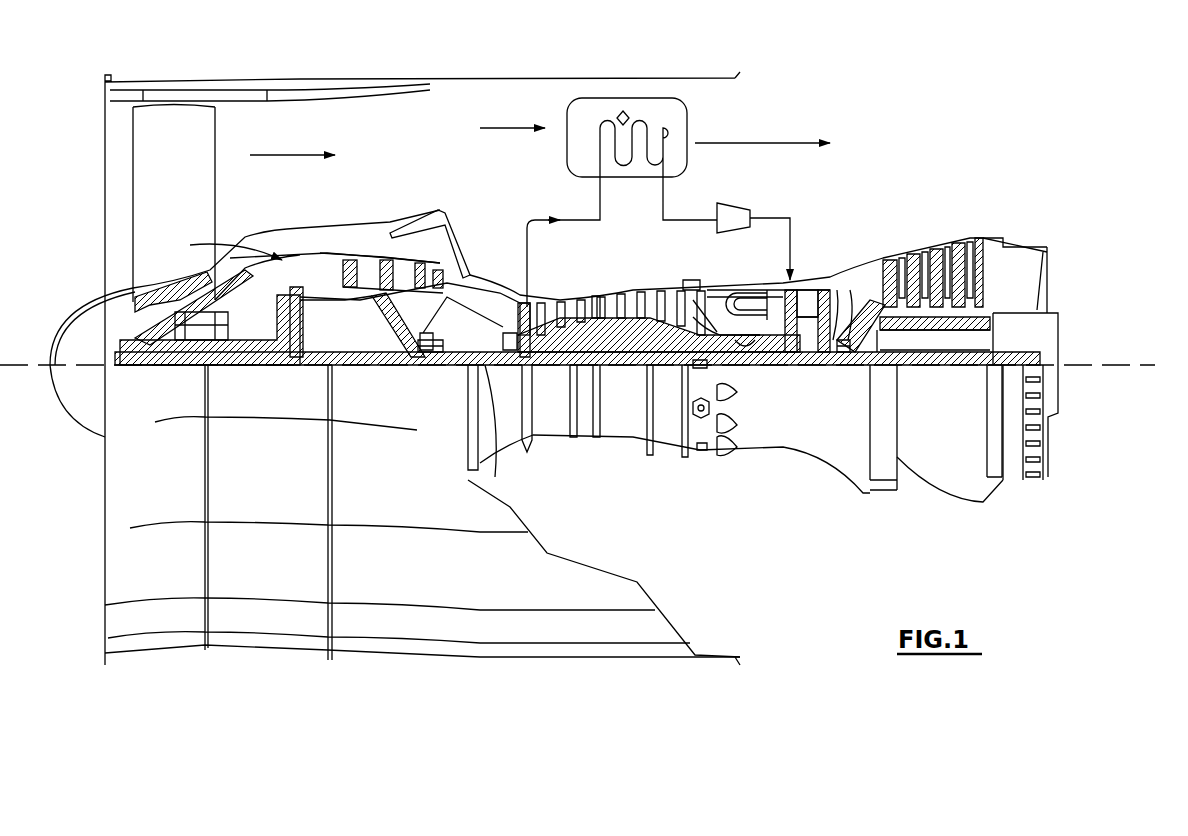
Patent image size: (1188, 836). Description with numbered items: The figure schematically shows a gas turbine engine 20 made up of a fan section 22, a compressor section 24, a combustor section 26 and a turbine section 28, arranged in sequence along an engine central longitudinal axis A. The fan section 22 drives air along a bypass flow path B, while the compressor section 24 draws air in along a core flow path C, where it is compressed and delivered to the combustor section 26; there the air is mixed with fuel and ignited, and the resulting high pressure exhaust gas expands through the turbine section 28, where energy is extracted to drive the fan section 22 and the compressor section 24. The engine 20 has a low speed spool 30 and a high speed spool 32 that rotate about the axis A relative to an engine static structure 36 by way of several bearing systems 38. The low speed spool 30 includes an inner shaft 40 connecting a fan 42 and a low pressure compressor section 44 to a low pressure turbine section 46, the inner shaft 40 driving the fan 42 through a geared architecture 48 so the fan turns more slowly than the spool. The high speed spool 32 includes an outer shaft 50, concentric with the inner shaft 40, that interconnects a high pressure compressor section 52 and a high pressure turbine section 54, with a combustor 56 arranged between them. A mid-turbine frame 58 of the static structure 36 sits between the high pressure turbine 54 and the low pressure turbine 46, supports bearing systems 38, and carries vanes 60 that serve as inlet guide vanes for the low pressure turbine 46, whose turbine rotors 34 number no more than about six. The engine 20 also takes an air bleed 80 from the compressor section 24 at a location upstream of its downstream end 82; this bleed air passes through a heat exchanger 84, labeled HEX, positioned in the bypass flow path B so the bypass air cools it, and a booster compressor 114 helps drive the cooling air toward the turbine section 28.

The gas turbine engine 20 is at (752, 128).
The fan section 22 is at (315, 46).
The compressor section 24 is at (727, 194).
The combustor section 26 is at (828, 194).
The turbine section 28 is at (1002, 194).
The low speed spool 30 is at (625, 380).
The high speed spool 32 is at (660, 337).
The turbine rotors 34 is at (945, 318).
The engine static structure 36 is at (665, 465).
The bearing systems 38 is at (428, 354).
The inner shaft 40 is at (493, 455).
The fan 42 is at (190, 208).
The low pressure compressor section 44 is at (402, 270).
The low pressure turbine section 46 is at (935, 260).
The geared architecture 48 is at (294, 348).
The outer shaft 50 is at (745, 352).
The high pressure compressor section 52 is at (596, 330).
The high pressure turbine section 54 is at (810, 290).
The combustor 56 is at (742, 300).
The mid-turbine frame 58 is at (856, 265).
The vanes 60 is at (886, 332).
The air bleed 80 is at (527, 280).
The downstream end 82 is at (690, 280).
The heat exchanger 84 is at (590, 113).
The booster compressor 114 is at (717, 230).
The engine central longitudinal axis A is at (1135, 365).
The bypass flow path B is at (287, 155).
The core flow path C is at (225, 246).
The heat exchanger HEX is at (623, 110).